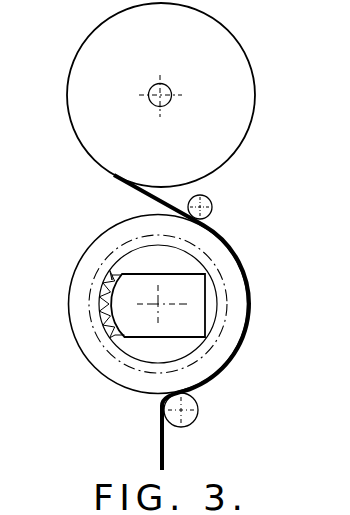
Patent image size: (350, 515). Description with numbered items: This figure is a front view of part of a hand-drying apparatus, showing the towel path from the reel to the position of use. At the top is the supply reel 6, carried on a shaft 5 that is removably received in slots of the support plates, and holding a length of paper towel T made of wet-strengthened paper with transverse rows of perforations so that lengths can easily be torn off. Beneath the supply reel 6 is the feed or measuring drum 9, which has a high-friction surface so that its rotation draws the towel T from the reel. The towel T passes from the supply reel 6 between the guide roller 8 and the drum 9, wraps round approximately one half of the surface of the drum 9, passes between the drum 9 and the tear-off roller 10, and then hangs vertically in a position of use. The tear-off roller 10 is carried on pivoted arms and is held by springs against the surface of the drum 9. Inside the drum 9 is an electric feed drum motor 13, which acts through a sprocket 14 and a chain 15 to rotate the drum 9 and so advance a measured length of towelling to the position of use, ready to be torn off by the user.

The shaft 5 is at (172, 90).
The supply reel 6 is at (235, 65).
The guide roller 8 is at (213, 205).
The feed or measuring drum 9 is at (98, 372).
The tear-off roller 10 is at (198, 412).
The electric feed drum motor 13 is at (193, 298).
The sprocket 14 is at (93, 328).
The chain 15 is at (98, 275).
The paper towel T is at (160, 442).